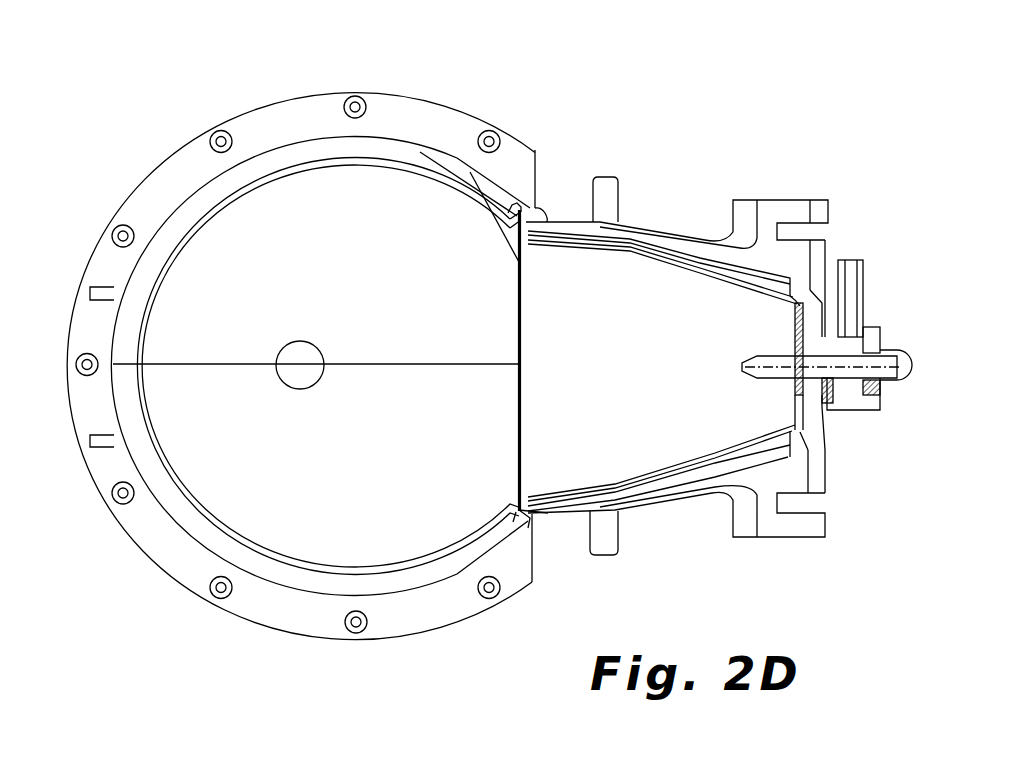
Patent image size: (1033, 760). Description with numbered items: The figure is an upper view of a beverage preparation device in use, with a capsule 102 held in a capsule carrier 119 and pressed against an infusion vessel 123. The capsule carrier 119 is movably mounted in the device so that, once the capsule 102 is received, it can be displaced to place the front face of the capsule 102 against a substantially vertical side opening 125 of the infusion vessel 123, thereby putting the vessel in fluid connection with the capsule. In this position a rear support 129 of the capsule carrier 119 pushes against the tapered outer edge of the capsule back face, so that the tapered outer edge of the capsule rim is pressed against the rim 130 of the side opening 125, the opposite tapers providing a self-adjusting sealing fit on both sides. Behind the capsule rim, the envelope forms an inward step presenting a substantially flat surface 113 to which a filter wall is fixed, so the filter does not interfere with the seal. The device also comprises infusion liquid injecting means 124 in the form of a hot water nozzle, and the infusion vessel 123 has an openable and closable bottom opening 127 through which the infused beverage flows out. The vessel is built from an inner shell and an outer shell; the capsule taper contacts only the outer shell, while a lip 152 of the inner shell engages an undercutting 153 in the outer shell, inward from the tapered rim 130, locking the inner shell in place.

The capsule 102 is at (645, 417).
The substantially flat surface 113 is at (523, 509).
The capsule carrier 119 is at (677, 163).
The infusion vessel 123 is at (313, 177).
The infusion liquid injecting means 124 is at (819, 369).
The substantially vertical side opening 125 is at (512, 262).
The bottom opening 127 is at (290, 357).
The rear support 129 is at (810, 297).
The rim of the side opening 130 is at (534, 206).
The lip 152 is at (519, 525).
The undercutting 153 is at (518, 510).